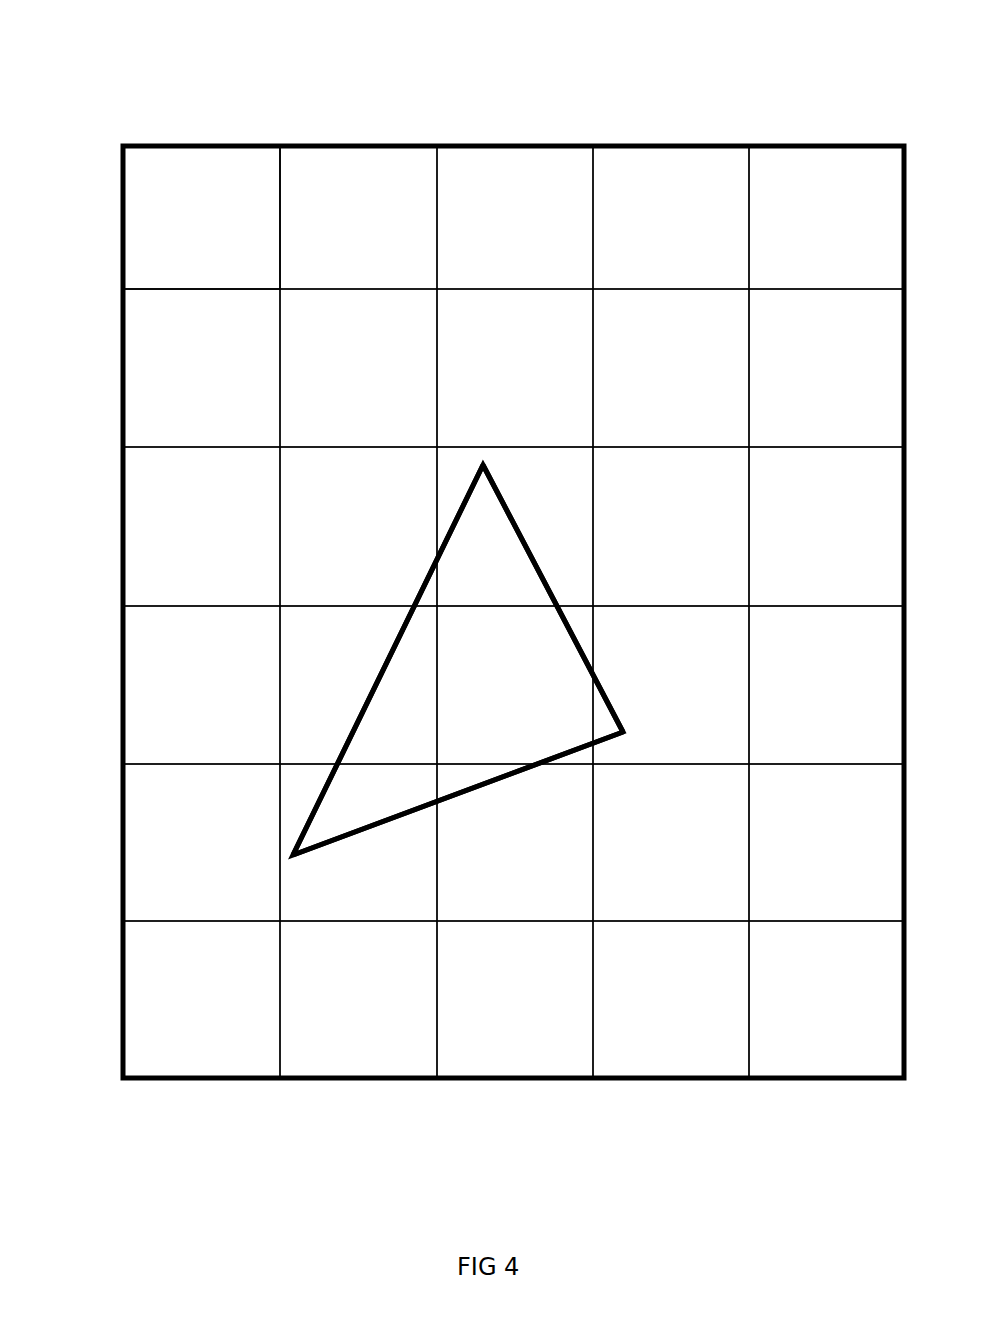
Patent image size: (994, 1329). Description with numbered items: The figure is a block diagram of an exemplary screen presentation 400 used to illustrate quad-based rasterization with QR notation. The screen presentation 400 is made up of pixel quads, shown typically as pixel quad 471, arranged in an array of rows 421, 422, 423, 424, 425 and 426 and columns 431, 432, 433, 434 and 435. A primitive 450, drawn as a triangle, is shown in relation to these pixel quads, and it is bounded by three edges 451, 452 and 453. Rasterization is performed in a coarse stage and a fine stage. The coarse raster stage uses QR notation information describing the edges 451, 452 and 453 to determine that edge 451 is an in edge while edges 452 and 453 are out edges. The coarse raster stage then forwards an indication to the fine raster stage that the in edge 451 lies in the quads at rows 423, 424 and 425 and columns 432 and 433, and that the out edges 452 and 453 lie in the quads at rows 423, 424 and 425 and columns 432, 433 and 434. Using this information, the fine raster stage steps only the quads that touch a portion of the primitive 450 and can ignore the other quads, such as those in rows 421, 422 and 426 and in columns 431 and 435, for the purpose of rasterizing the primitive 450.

The screen presentation 400 is at (529, 45).
The row 421 is at (108, 247).
The row 422 is at (108, 407).
The row 423 is at (108, 557).
The row 424 is at (108, 730).
The row 425 is at (108, 890).
The row 426 is at (108, 1047).
The column 431 is at (238, 132).
The column 432 is at (406, 132).
The column 433 is at (559, 132).
The column 434 is at (713, 132).
The column 435 is at (877, 132).
The primitive 450 is at (466, 667).
The in edge 451 is at (405, 592).
The out edge 452 is at (578, 606).
The out edge 453 is at (563, 782).
The pixel quad 471 is at (201, 217).